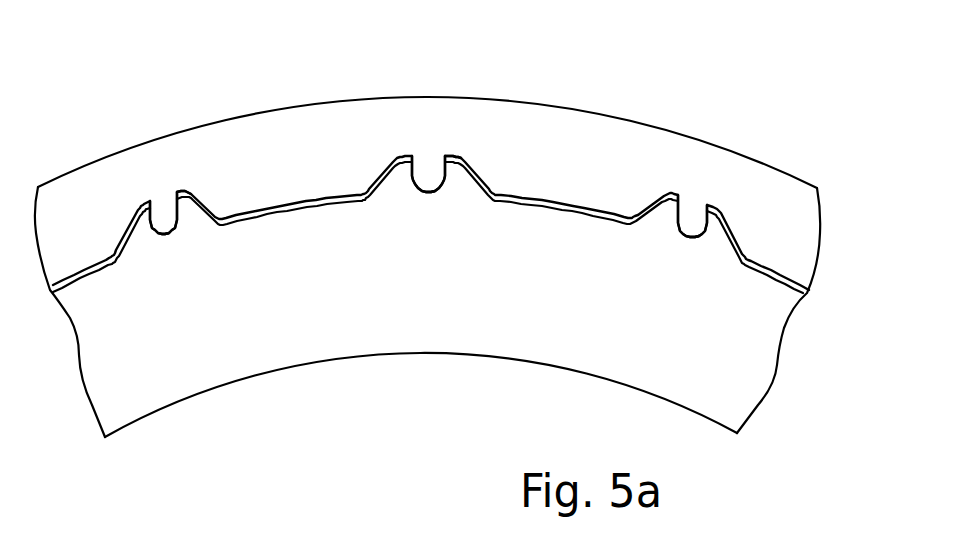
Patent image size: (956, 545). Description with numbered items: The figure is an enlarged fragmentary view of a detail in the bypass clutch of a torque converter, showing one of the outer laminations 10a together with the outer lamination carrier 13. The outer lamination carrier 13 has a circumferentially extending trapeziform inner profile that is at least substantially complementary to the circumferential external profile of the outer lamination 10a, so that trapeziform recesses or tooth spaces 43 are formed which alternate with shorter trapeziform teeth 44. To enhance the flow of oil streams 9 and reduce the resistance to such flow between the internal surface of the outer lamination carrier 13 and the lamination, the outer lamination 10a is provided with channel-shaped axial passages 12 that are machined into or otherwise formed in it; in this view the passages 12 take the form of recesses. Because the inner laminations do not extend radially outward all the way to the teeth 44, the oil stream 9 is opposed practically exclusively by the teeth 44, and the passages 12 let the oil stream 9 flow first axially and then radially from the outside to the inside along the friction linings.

The oil stream 9 is at (165, 207).
The outer lamination 10a is at (414, 310).
The channel-shaped axial passage 12 is at (155, 213).
The outer lamination carrier 13 is at (595, 145).
The trapeziform recess 43 is at (300, 213).
The trapeziform tooth 44 is at (188, 193).